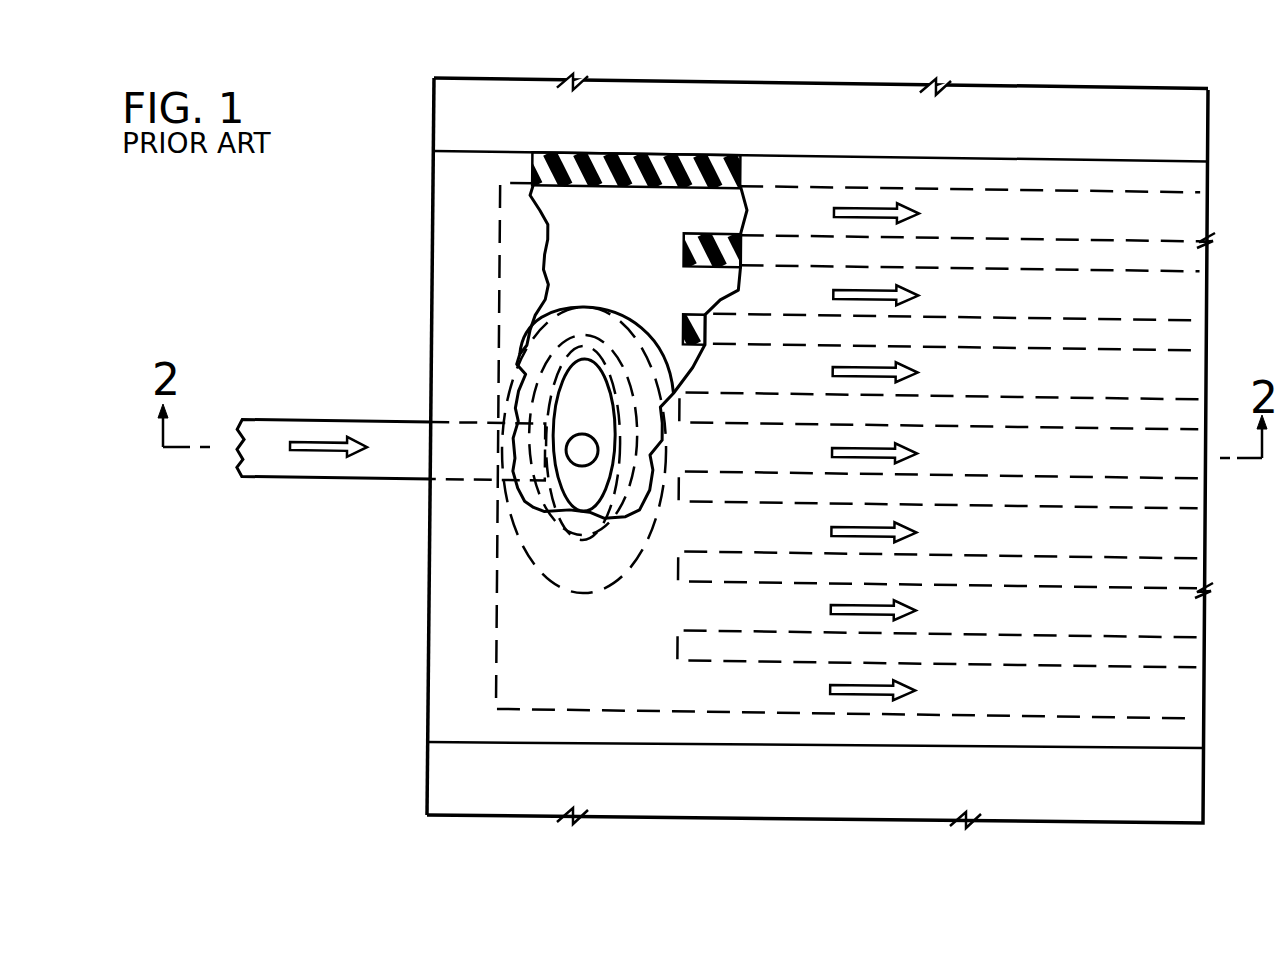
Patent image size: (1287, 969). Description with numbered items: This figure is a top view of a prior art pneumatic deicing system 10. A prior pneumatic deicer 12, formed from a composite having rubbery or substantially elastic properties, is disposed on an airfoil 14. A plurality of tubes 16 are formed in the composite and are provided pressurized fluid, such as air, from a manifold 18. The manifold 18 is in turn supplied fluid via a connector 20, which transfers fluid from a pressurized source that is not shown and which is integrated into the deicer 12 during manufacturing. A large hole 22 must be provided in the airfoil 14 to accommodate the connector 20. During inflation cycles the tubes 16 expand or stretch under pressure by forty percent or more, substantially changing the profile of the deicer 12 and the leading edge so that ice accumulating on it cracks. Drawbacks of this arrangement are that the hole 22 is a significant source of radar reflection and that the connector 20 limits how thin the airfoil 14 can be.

The apparatus 10 is at (1076, 75).
The pneumatic deicer 12 is at (446, 216).
The airfoil 14 is at (775, 105).
The tubes 16 is at (715, 212).
The manifold 18 is at (585, 212).
The connector 20 is at (603, 323).
The hole 22 is at (537, 372).